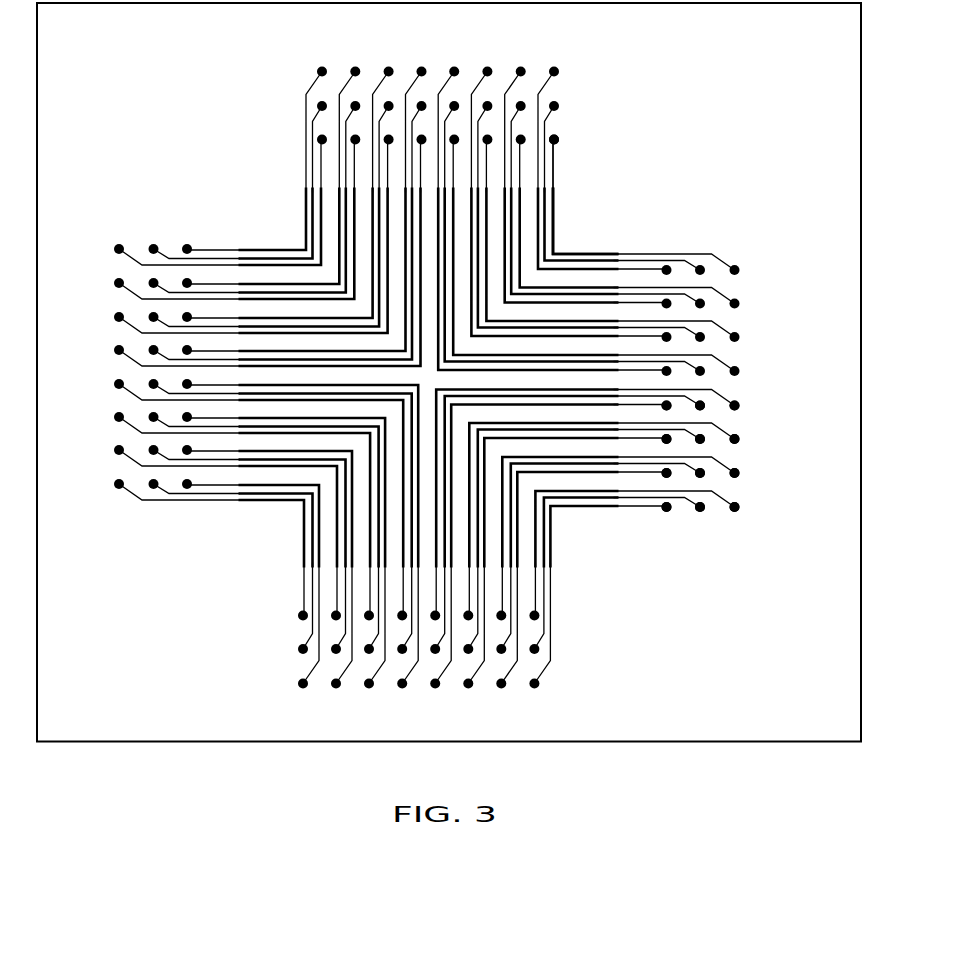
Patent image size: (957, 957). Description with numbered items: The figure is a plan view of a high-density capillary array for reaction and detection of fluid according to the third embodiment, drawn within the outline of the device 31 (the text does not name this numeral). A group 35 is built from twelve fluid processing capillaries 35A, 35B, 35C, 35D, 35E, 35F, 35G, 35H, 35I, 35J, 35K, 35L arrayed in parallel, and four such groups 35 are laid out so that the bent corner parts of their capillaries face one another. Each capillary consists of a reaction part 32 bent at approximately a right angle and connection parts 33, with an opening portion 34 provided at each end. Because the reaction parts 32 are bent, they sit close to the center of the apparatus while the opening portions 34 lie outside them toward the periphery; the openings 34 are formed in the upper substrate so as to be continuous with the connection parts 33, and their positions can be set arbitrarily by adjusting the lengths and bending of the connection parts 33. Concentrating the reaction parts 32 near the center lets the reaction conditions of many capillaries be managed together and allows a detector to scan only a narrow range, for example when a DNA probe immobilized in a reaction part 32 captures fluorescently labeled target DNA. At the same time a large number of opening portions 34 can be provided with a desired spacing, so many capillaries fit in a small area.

The wiring board 31 is at (732, 733).
The reaction part 32 is at (606, 253).
The connection part 33 is at (555, 172).
The opening portion 34 is at (559, 138).
The group 35 is at (741, 511).
The capillary 35A is at (733, 401).
The capillary 35B is at (705, 406).
The capillary 35C is at (672, 409).
The capillary 35D is at (740, 440).
The capillary 35E is at (706, 441).
The capillary 35F is at (672, 442).
The capillary 35G is at (740, 476).
The capillary 35H is at (706, 476).
The capillary 35I is at (672, 477).
The capillary 35J is at (724, 510).
The capillary 35K is at (689, 509).
The capillary 35L is at (648, 509).